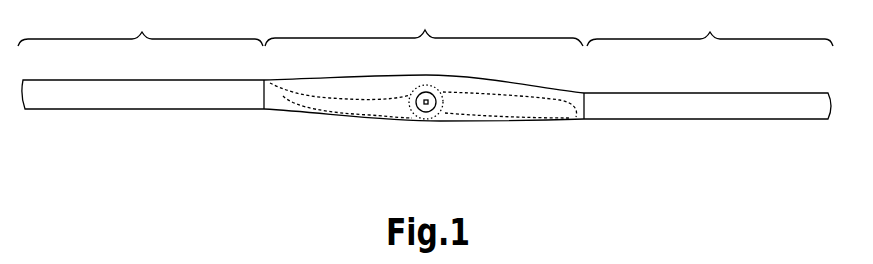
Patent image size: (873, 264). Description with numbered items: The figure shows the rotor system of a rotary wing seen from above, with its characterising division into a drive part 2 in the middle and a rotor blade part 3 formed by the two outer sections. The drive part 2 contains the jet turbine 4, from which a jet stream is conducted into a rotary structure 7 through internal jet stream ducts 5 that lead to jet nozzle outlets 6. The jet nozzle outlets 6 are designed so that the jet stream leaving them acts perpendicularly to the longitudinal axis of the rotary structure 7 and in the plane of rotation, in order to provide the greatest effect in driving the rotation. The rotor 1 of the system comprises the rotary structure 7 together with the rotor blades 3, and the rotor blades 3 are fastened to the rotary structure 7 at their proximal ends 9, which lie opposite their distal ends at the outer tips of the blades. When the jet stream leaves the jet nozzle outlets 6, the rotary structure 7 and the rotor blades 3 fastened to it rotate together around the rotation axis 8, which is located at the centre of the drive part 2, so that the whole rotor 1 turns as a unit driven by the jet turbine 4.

The rotor 1 is at (303, 146).
The drive part 2 is at (424, 60).
The rotor blade part 3 is at (425, 55).
The jet turbine 4 is at (436, 109).
The internal jet stream ducts 5 is at (315, 101).
The jet nozzle outlets 6 is at (573, 118).
The rotary structure 7 is at (489, 118).
The rotation axis 8 is at (429, 100).
The proximal ends 9 is at (258, 96).